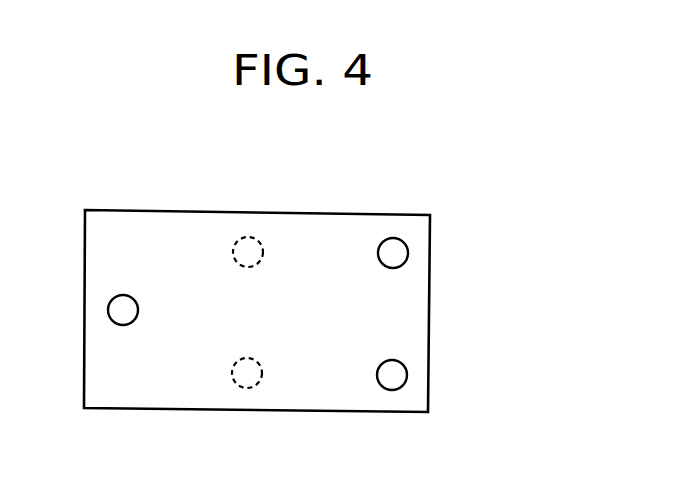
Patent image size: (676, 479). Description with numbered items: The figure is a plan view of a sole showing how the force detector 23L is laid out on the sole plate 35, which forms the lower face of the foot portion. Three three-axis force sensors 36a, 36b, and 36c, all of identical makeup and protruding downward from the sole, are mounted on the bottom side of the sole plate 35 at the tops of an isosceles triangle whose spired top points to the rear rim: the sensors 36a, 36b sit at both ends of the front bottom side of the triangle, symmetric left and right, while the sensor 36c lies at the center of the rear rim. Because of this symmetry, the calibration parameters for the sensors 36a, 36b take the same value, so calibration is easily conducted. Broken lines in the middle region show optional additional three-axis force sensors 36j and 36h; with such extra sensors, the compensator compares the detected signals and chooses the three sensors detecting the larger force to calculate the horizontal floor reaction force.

The sole plate 35 is at (368, 213).
The force detector 23L is at (185, 196).
The 3-axis force sensor 36a is at (398, 252).
The 3-axis force sensor 36b is at (397, 377).
The 3-axis force sensor 36c is at (125, 303).
The 3-axis force sensor 36j is at (255, 238).
The 3-axis force sensor 36h is at (258, 380).